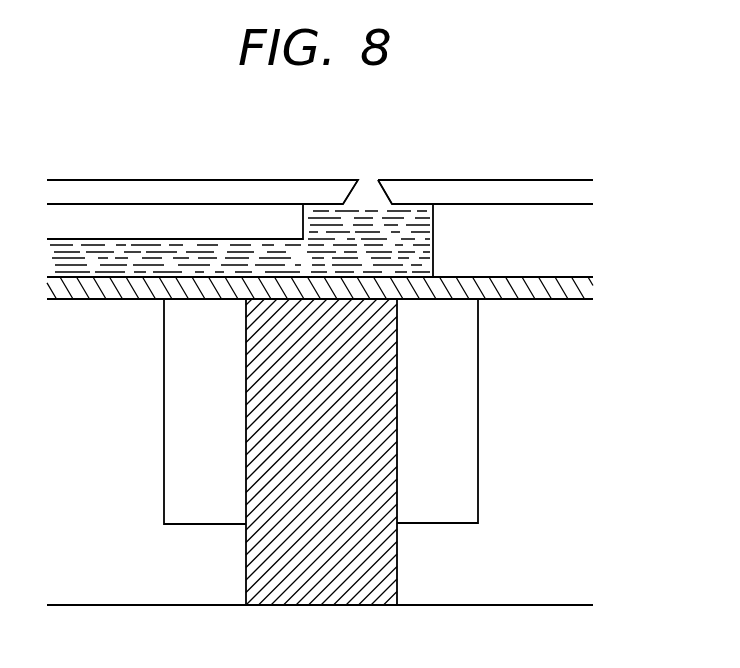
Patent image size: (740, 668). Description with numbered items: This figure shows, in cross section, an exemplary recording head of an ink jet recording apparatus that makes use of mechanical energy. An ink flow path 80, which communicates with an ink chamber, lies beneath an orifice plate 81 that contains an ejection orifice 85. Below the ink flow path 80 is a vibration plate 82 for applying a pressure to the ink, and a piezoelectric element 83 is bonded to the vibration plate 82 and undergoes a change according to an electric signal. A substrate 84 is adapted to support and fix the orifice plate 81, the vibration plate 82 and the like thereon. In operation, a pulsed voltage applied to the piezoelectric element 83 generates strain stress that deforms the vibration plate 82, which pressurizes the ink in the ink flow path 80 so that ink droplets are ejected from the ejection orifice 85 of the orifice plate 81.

The ink flow path 80 is at (208, 246).
The orifice plate 81 is at (562, 184).
The vibration plate 82 is at (539, 300).
The piezoelectric element 83 is at (385, 455).
The substrate 84 is at (488, 391).
The ejection orifice 85 is at (366, 195).